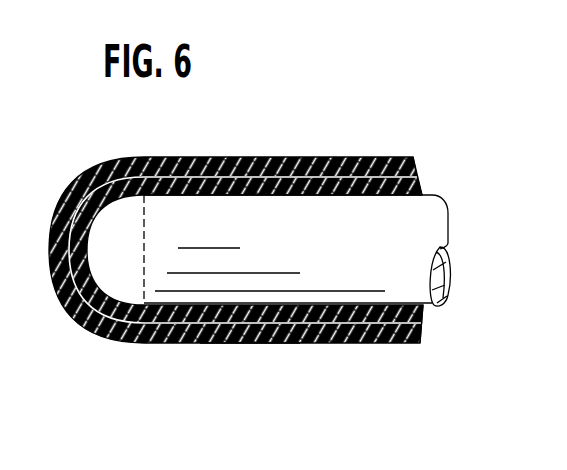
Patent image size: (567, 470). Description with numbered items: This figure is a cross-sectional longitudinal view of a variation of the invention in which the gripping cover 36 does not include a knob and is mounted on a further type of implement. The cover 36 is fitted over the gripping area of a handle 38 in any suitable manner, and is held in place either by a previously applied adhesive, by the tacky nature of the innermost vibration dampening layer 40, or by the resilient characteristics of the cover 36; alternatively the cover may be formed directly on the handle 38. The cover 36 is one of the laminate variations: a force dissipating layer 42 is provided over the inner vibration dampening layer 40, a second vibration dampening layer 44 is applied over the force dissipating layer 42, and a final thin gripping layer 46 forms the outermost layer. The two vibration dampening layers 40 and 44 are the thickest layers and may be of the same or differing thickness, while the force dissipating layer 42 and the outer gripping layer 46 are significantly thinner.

The gripping cover 36 is at (66, 184).
The handle 38 is at (414, 228).
The innermost vibration dampening layer 40 is at (424, 190).
The force dissipating layer 42 is at (424, 317).
The second vibration dampening layer 44 is at (422, 336).
The gripping layer 46 is at (267, 343).